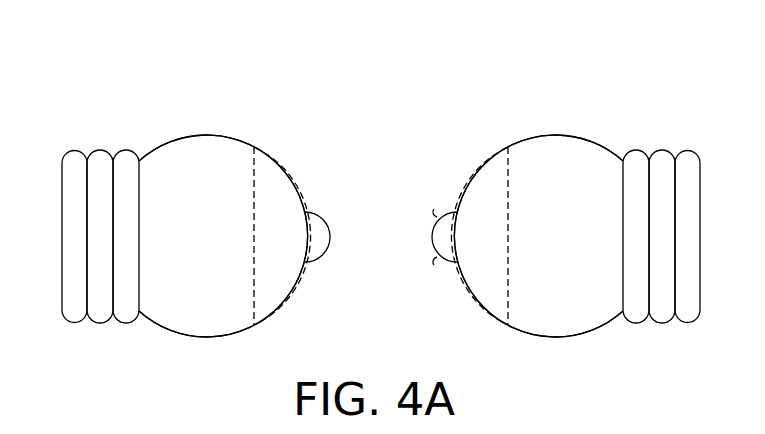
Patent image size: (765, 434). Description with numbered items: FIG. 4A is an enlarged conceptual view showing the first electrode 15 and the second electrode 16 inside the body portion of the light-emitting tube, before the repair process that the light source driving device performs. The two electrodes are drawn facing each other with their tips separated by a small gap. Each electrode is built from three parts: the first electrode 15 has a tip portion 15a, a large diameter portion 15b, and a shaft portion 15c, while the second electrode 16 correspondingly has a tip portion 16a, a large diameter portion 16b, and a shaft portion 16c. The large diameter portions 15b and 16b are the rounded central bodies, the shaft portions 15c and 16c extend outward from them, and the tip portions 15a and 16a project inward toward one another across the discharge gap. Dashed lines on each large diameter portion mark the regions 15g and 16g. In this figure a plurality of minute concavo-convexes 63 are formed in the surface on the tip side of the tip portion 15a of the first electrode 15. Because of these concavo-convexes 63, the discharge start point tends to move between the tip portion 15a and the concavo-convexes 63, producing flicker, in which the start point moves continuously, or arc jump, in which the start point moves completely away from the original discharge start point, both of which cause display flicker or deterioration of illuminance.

The first electrode 15 is at (666, 88).
The tip portion 15a is at (437, 235).
The large diameter portion 15b is at (540, 136).
The shaft portion 15c is at (693, 167).
The reflective surface region of first light guide 15g is at (501, 146).
The second electrode 16 is at (72, 98).
The tip portion 16a is at (330, 238).
The large diameter portion 16b is at (225, 136).
The shaft portion 16c is at (73, 312).
The reflective surface region of second light guide 16g is at (268, 146).
The minute concavo-convexes 63 is at (433, 212).